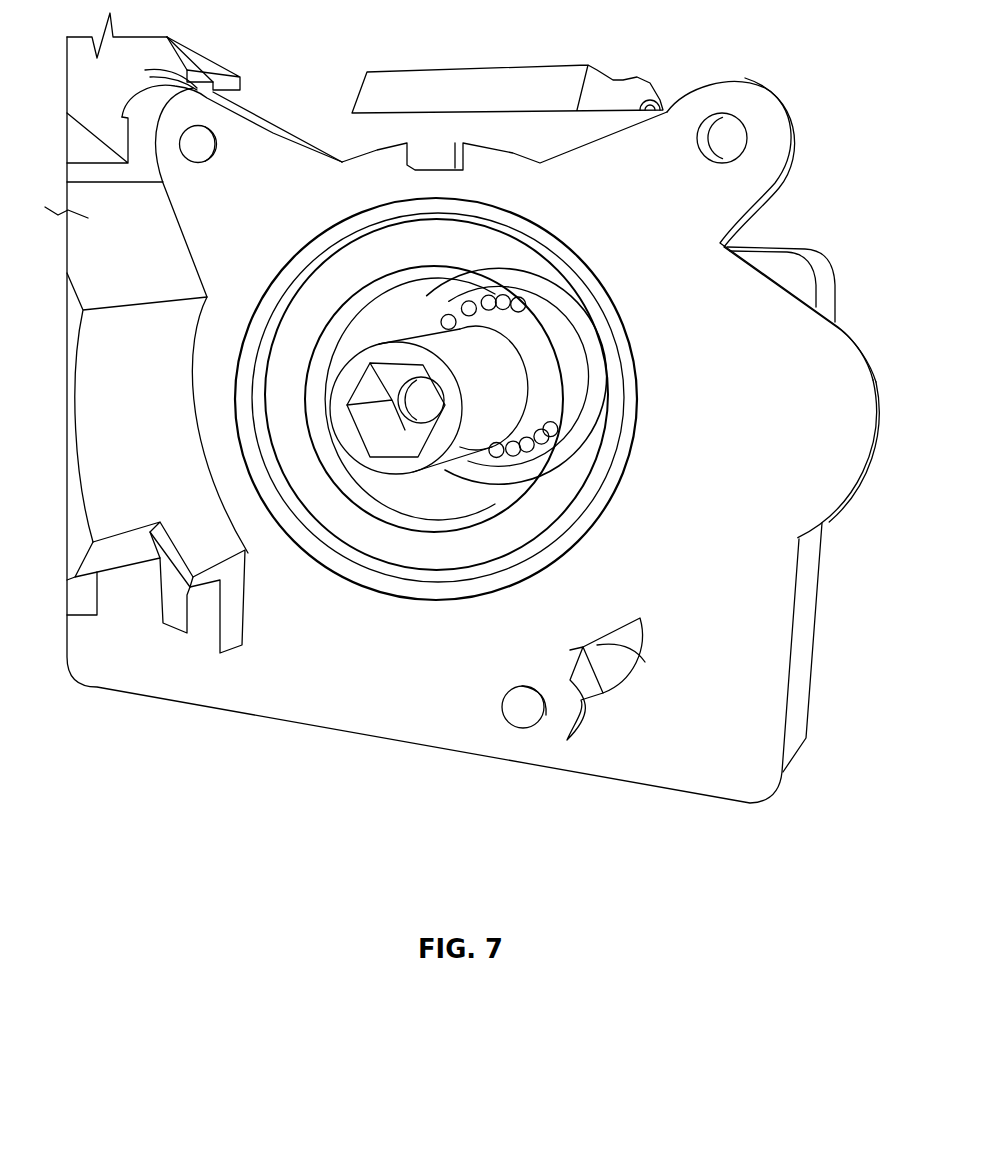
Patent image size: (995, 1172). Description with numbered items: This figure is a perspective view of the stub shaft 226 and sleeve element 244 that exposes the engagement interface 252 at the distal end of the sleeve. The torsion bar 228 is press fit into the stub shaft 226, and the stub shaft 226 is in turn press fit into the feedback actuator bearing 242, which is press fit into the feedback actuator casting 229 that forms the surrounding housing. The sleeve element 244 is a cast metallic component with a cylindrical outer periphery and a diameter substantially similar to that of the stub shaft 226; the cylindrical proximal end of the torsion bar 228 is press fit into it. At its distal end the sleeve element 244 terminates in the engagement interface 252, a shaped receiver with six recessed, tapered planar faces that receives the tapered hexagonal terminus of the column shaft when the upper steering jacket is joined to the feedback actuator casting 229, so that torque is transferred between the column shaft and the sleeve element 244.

The stub shaft 226 is at (517, 295).
The torsion bar 228 is at (424, 397).
The feedback actuator casting 229 is at (726, 615).
The feedback actuator bearing 242 is at (460, 293).
The sleeve element 244 is at (478, 413).
The engagement interface 252 is at (373, 417).